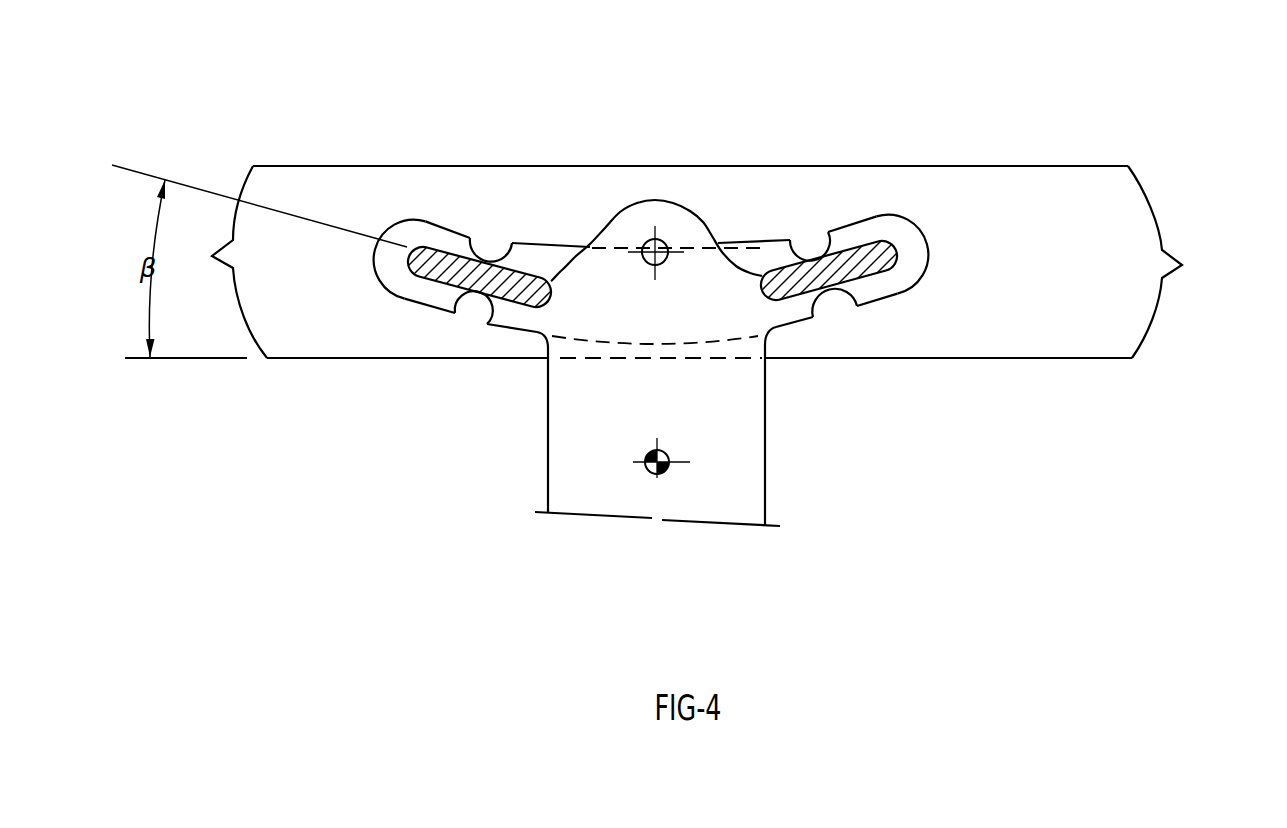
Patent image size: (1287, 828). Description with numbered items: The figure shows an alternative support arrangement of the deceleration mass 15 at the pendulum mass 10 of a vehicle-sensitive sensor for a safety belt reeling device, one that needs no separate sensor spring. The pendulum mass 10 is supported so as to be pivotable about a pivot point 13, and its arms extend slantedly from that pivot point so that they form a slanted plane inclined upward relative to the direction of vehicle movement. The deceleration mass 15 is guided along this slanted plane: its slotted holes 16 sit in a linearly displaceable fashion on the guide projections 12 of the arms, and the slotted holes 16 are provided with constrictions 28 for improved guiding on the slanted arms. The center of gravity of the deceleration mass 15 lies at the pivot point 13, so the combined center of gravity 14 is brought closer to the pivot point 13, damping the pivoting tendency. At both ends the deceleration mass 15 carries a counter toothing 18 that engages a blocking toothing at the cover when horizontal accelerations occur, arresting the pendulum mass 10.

The pendulum mass 10 is at (742, 447).
The guide projections 12 is at (857, 250).
The pivot point 13 is at (660, 243).
The combined center of gravity 14 is at (660, 470).
The deceleration mass 15 is at (1070, 198).
The slotted holes 16 is at (907, 238).
The counter toothing 18 is at (1182, 265).
The constrictions 28 is at (805, 250).